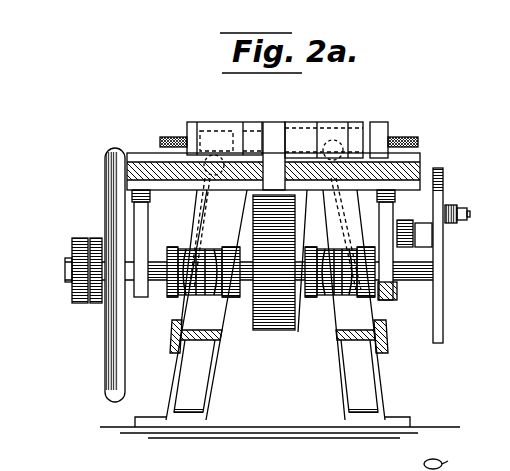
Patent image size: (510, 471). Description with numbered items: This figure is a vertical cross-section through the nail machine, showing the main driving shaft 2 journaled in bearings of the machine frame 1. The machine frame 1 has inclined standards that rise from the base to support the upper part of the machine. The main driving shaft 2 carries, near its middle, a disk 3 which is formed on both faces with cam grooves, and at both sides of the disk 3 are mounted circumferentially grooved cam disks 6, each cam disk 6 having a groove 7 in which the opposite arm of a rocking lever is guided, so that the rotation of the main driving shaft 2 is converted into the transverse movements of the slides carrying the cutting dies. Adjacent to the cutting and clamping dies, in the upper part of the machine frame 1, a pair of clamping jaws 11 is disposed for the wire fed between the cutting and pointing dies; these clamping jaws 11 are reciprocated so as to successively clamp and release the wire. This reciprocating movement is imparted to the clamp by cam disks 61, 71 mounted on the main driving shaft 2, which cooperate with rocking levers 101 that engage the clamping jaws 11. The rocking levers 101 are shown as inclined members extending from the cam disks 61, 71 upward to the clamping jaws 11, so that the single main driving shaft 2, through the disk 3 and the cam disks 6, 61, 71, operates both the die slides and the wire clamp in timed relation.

The machine frame 1 is at (197, 393).
The main driving shaft 2 is at (67, 272).
The disk 3 is at (283, 332).
The cam disk 6 is at (172, 297).
The cam disk 61 is at (368, 246).
The groove 7 is at (212, 298).
The cam disk 71 is at (190, 262).
The rocking lever 101 is at (205, 202).
The clamping jaws 11 is at (279, 127).